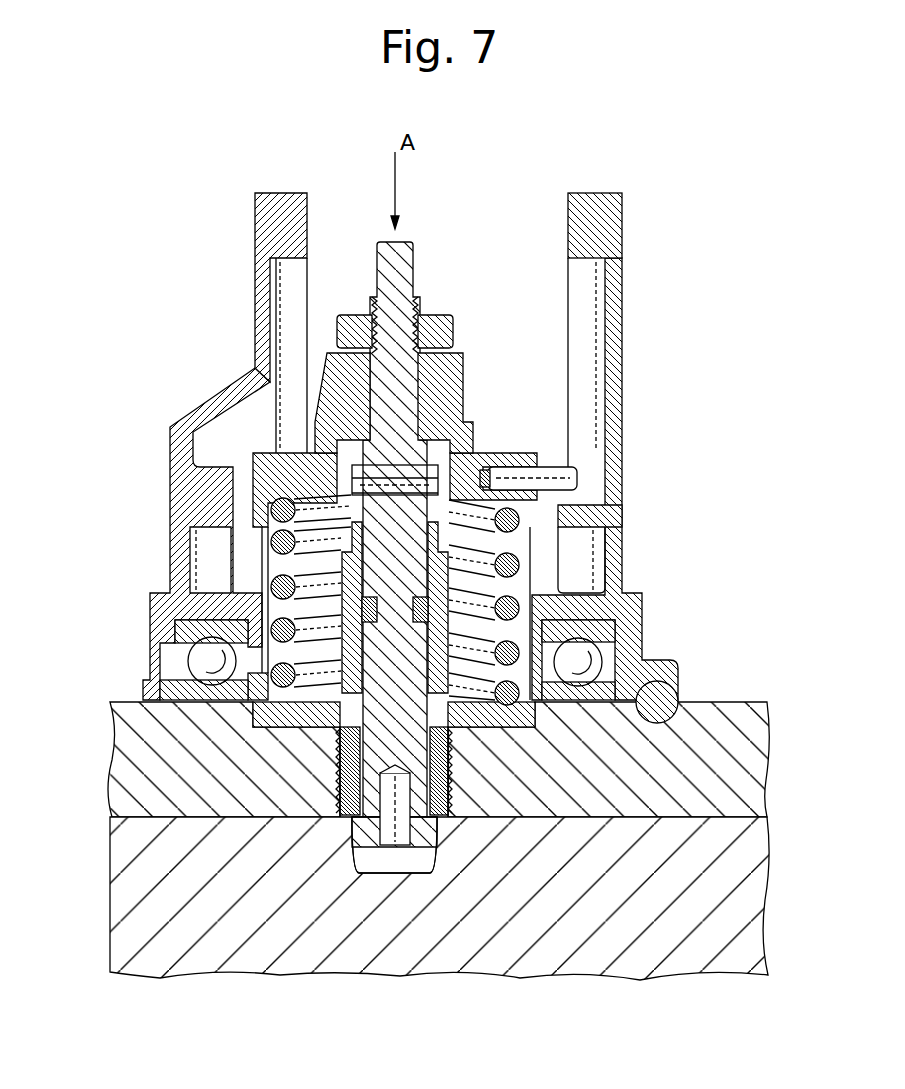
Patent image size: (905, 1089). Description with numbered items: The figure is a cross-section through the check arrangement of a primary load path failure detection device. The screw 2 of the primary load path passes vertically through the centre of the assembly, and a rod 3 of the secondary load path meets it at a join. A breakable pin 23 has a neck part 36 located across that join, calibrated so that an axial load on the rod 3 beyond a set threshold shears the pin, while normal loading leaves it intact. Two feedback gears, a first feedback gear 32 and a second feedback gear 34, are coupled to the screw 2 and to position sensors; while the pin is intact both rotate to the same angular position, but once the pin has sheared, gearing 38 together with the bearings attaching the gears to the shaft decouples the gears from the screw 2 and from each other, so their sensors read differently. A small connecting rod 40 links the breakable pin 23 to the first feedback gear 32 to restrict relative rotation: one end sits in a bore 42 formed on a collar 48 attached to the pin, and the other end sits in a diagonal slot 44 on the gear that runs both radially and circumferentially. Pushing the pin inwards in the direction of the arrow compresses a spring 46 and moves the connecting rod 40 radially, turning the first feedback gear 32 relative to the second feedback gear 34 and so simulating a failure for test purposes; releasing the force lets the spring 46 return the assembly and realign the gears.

The screw 2 is at (683, 763).
The rod 3 is at (252, 918).
The breakable pin 23 is at (397, 752).
The first feedback gear 32 is at (593, 222).
The second feedback gear 34 is at (282, 222).
The neck part 36 is at (370, 803).
The gearing 38 is at (452, 797).
The connecting rod 40 is at (549, 468).
The bore 42 is at (494, 466).
The diagonal slot 44 is at (577, 498).
The spring 46 is at (300, 580).
The collar 48 is at (351, 385).